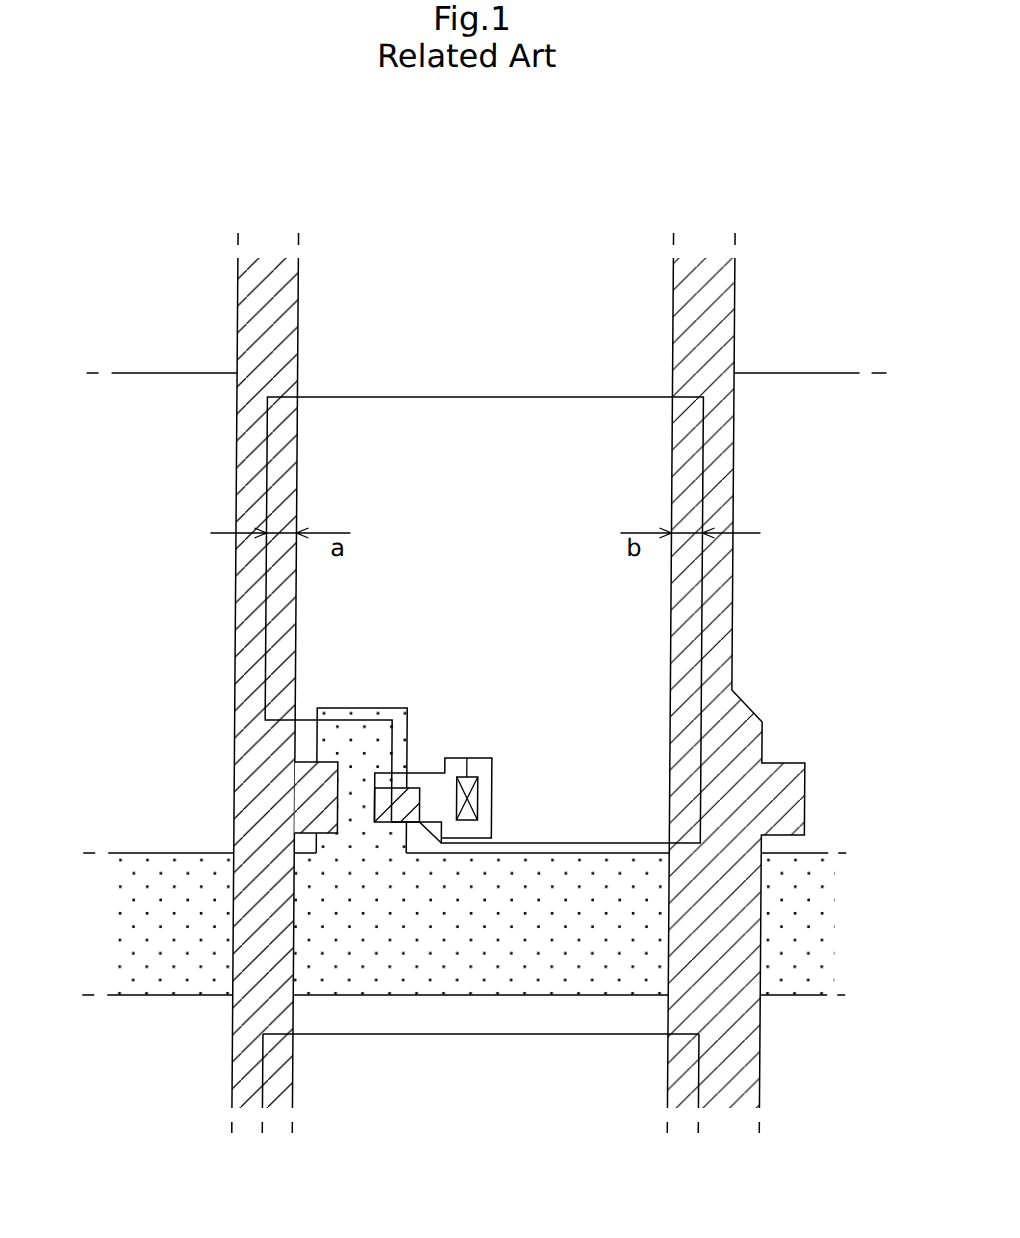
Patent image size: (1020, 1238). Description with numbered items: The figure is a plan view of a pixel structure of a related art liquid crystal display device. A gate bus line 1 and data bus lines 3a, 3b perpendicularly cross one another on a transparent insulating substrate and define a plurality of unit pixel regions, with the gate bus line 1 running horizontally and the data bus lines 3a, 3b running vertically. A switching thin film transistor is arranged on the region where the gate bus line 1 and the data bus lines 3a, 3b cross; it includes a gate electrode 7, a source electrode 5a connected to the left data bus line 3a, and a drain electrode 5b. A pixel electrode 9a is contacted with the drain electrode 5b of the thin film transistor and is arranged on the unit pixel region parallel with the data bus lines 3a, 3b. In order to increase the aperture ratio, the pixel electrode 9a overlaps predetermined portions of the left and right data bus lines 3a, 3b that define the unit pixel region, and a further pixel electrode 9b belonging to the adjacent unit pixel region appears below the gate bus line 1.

The gate bus line 1 is at (163, 964).
The data bus line 3a is at (265, 316).
The data bus line 3b is at (710, 318).
The source electrode 5a is at (318, 815).
The drain electrode 5b is at (383, 797).
The gate electrode 7 is at (343, 738).
The pixel electrode 9a is at (623, 622).
The pixel electrode 9b is at (632, 1095).